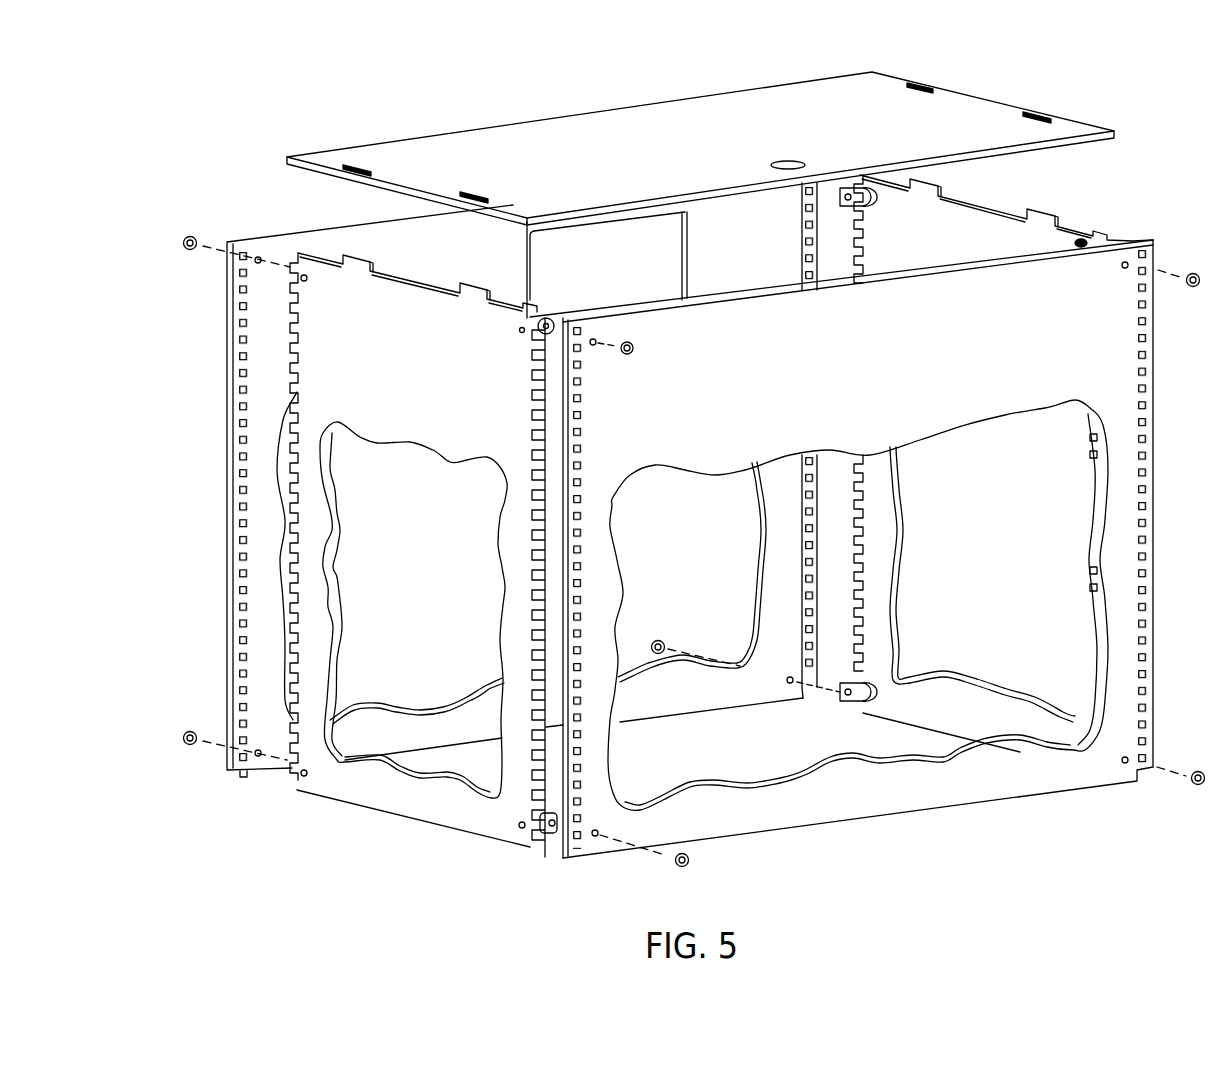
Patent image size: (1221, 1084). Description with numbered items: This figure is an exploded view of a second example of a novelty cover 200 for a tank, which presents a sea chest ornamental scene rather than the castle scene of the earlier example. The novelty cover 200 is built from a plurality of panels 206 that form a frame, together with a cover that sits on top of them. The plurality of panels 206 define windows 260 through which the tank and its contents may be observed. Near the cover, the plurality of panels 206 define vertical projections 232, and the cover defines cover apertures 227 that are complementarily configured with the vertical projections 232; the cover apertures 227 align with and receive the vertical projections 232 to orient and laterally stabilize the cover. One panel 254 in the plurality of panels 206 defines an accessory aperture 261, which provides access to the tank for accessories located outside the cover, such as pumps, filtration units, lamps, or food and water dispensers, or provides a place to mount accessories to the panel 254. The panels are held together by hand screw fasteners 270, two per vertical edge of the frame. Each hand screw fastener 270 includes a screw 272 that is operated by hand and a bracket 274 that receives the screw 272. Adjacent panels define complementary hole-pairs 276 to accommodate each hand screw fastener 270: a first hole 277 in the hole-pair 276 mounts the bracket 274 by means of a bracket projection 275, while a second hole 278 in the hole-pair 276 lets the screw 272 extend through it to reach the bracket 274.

The novelty cover 200 is at (129, 100).
The plurality of panels 206 is at (222, 229).
The cover apertures 227 is at (415, 150).
The vertical projections 232 is at (356, 264).
The panel 254 is at (797, 237).
The windows 260 is at (947, 428).
The accessory aperture 261 is at (526, 241).
The hand screw fasteners 270 is at (634, 334).
The screw 272 is at (633, 351).
The bracket 274 is at (546, 318).
The bracket projection 275 is at (512, 328).
The hole-pairs 276 is at (515, 343).
The first hole 277 is at (519, 328).
The second hole 278 is at (593, 338).